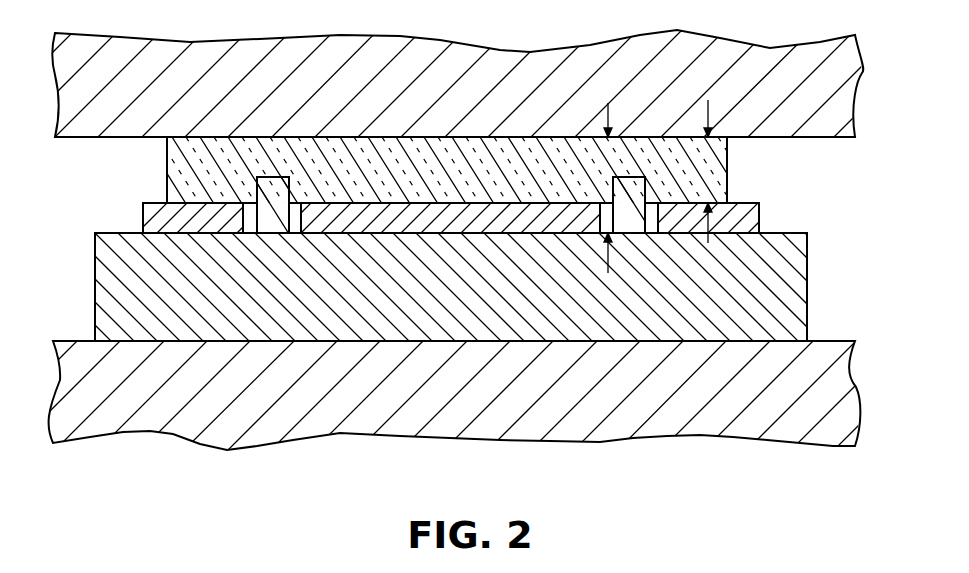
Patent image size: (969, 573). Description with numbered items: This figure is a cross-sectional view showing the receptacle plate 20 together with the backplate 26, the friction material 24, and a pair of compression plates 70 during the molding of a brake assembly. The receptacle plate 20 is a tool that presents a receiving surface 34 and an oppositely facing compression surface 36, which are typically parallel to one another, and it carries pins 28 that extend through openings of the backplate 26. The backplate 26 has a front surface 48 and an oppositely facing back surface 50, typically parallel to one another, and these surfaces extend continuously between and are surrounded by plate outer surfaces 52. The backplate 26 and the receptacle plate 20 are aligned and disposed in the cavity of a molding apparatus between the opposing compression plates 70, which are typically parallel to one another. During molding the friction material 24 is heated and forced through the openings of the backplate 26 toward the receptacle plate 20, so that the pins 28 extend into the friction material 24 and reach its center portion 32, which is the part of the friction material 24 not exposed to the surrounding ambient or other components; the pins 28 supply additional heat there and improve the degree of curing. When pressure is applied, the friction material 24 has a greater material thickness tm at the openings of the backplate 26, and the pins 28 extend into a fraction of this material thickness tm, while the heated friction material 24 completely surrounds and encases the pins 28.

The receptacle plate 20 is at (809, 273).
The friction material 24 is at (727, 152).
The backplate 26 is at (761, 218).
The pin 28 is at (278, 177).
The center portion 32 is at (307, 170).
The receiving surface 34 is at (793, 232).
The compression surface 36 is at (686, 343).
The front surface 48 is at (157, 202).
The back surface 50 is at (158, 233).
The plate outer surfaces 52 is at (143, 218).
The compression plates 70 is at (862, 73).
The material thickness tm is at (608, 113).